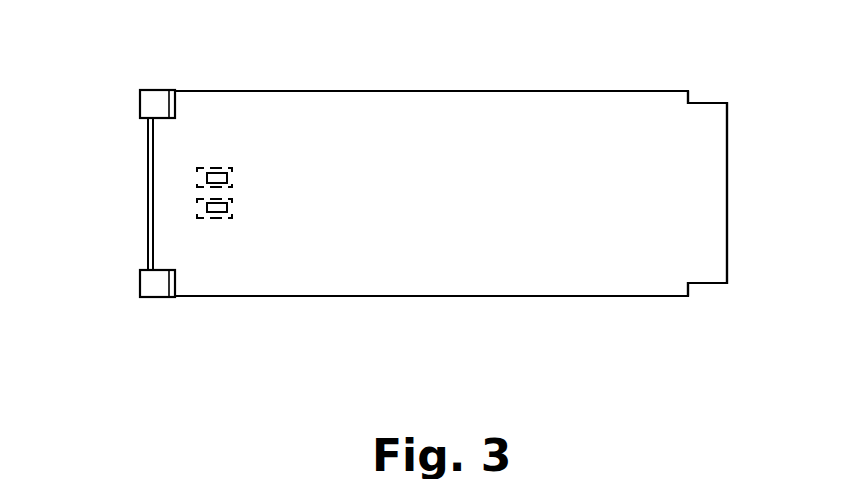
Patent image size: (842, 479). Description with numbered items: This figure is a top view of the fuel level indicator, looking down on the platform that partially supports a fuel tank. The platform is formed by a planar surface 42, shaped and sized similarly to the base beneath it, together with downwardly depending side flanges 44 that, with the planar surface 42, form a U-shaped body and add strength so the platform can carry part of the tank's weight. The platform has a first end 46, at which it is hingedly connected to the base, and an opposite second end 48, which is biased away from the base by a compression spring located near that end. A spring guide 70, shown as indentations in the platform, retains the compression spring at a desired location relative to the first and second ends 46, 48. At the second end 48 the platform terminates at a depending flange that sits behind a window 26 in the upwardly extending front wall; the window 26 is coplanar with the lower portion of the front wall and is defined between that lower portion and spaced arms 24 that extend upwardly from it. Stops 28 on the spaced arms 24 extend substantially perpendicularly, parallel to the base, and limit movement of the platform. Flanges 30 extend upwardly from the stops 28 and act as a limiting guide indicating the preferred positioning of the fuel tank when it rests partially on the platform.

The spaced arms 24 is at (140, 107).
The window 26 is at (148, 230).
The stops 28 is at (153, 103).
The flanges 30 is at (168, 92).
The planar surface 42 is at (521, 204).
The side flanges 44 is at (517, 296).
The first end 46 is at (715, 180).
The second end 48 is at (157, 192).
The spring guide 70 is at (228, 203).